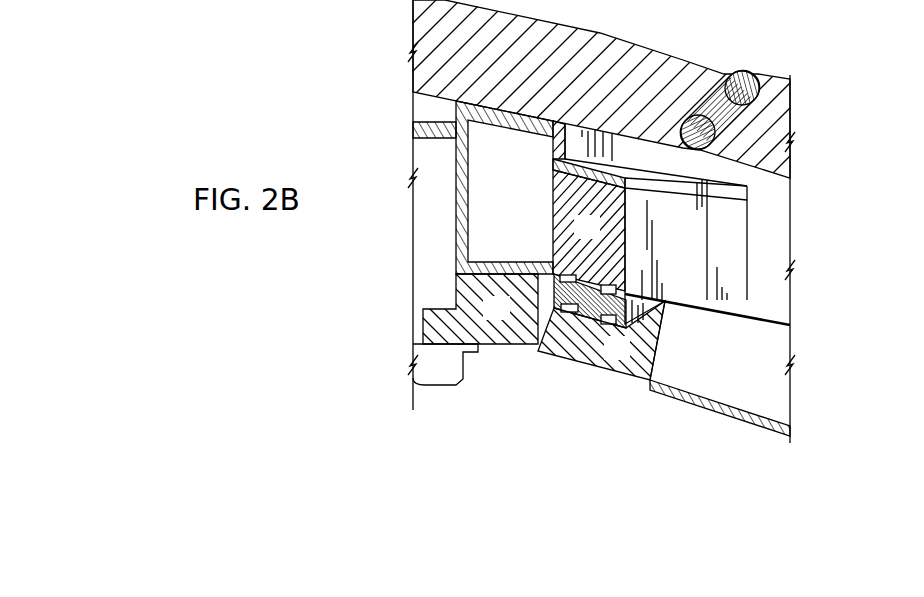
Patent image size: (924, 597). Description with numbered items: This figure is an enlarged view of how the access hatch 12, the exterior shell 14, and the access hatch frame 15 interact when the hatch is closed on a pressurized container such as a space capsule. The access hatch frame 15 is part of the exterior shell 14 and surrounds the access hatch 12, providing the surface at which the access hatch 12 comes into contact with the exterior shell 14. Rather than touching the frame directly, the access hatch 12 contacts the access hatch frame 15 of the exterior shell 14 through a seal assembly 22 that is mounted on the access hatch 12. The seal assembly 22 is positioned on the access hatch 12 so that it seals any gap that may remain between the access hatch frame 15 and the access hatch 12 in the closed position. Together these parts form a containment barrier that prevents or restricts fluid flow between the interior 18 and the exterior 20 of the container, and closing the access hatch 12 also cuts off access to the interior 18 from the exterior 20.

The exterior 20 is at (705, 49).
The access hatch 12 is at (576, 237).
The seal assembly 22 is at (562, 320).
The access hatch frame 15 is at (606, 357).
The exterior shell 14 is at (722, 358).
The interior 18 is at (597, 444).